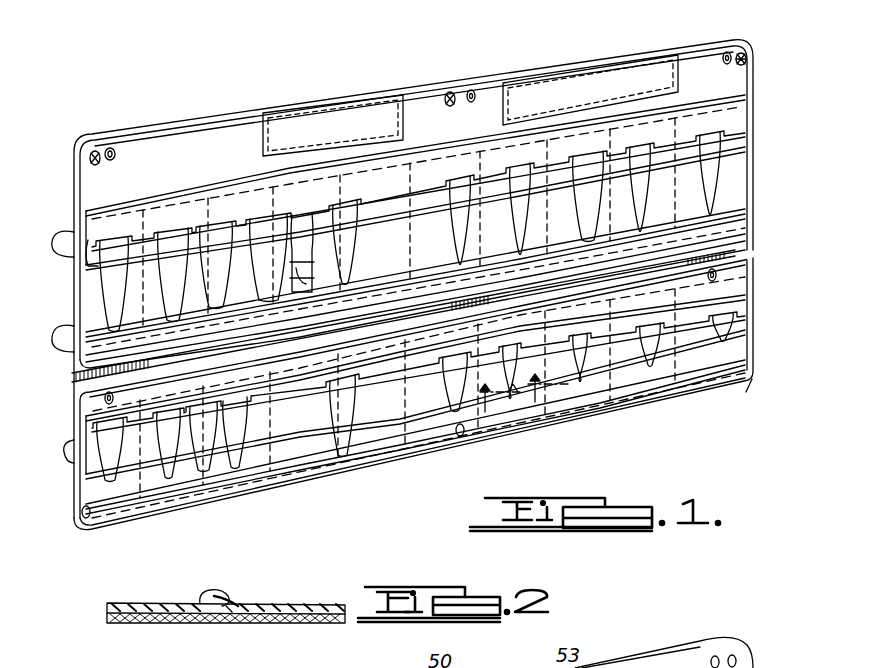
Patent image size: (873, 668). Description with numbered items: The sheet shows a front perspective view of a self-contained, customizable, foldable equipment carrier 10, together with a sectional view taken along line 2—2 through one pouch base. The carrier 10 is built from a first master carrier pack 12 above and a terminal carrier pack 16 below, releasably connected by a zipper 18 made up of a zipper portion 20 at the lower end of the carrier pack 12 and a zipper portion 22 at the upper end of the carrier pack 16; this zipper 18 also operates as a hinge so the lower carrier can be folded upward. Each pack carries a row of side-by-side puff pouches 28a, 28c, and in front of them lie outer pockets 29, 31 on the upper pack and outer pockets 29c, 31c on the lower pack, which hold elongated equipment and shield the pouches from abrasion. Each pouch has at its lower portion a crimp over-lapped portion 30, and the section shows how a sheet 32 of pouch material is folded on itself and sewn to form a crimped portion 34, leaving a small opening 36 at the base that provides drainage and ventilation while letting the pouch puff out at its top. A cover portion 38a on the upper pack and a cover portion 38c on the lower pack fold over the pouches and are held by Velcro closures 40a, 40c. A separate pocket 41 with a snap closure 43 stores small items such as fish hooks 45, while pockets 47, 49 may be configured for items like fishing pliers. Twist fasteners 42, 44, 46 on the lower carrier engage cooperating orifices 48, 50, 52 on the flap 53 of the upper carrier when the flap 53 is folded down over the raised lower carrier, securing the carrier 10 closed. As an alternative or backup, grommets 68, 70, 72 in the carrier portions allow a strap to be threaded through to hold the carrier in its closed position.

In FIG. 1, the equipment carrier 10 is at (90, 56).
In FIG. 1, the first master carrier pack 12 is at (72, 180).
In FIG. 1, the terminal carrier pack 16 is at (70, 522).
In FIG. 1, the zipper 18 is at (70, 382).
In FIG. 1, the zipper portion 20 is at (66, 350).
In FIG. 1, the zipper portion 22 is at (84, 432).
In FIG. 1, the puff pouches 28a is at (130, 212).
In FIG. 1, the puff pouches 28c is at (128, 470).
In FIG. 1, the outer pocket 29 is at (162, 240).
In FIG. 1, the outer pocket 29c is at (262, 408).
In FIG. 2, the crimp over-lapped portion 30 is at (212, 595).
In FIG. 1, the outer pocket 31 is at (612, 165).
In FIG. 1, the outer pocket 31c is at (602, 342).
In FIG. 2, the sheet 32 is at (315, 606).
In FIG. 2, the crimped portion 34 is at (238, 598).
In FIG. 2, the small opening 36 is at (228, 608).
In FIG. 1, the cover portion 38a is at (100, 232).
In FIG. 1, the cover portion 38c is at (66, 470).
In FIG. 1, the Velcro closure 40a is at (748, 216).
In FIG. 1, the Velcro closure 40c is at (748, 368).
In FIG. 1, the separate pocket 41 is at (280, 240).
In FIG. 1, the twist fastener 42 is at (746, 388).
In FIG. 1, the snap closure 43 is at (304, 260).
In FIG. 1, the twist fastener 44 is at (458, 438).
In FIG. 1, the fish hooks 45 is at (354, 212).
In FIG. 1, the twist fastener 46 is at (84, 520).
In FIG. 1, the pocket 47 is at (333, 117).
In FIG. 1, the orifice 48 is at (748, 68).
In FIG. 1, the pocket 49 is at (545, 83).
In FIG. 1, the orifice 50 is at (477, 93).
In FIG. 1, the orifice 52 is at (93, 150).
In FIG. 1, the flap 53 is at (175, 140).
In FIG. 1, the grommet 68 is at (723, 52).
In FIG. 1, the grommet 70 is at (447, 94).
In FIG. 1, the grommet 72 is at (111, 148).
In FIG. 1, the section line 2 is at (525, 383).